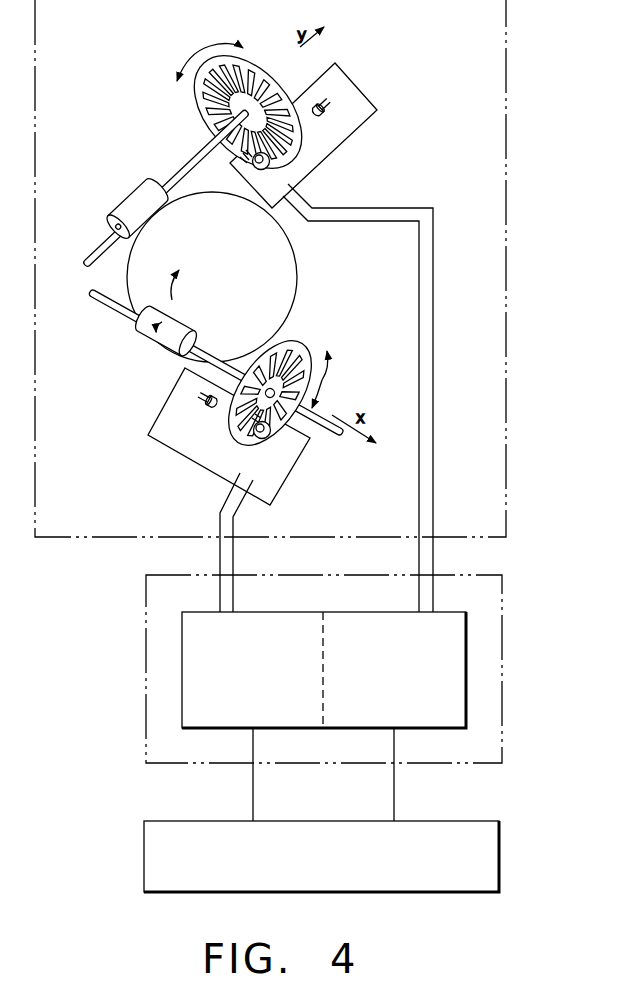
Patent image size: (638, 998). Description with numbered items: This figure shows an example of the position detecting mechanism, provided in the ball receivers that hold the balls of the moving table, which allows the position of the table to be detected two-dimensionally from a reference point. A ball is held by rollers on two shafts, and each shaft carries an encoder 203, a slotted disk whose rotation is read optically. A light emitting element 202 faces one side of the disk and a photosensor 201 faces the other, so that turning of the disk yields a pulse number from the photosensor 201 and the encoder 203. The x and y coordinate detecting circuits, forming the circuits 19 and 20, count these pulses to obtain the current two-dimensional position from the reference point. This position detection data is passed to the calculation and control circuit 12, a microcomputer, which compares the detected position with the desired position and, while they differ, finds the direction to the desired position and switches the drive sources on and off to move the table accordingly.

The position detecting circuit 20 is at (90, 539).
The position detecting circuit 19 is at (146, 668).
The calculation and control circuit 12 is at (144, 850).
The photosensor 201 is at (280, 440).
The light emitting element 202 is at (193, 393).
The encoder 203 is at (298, 342).